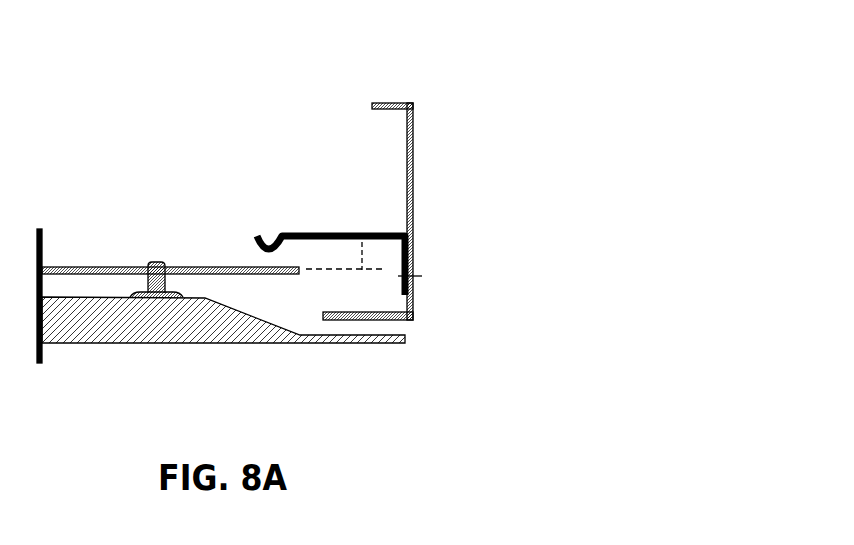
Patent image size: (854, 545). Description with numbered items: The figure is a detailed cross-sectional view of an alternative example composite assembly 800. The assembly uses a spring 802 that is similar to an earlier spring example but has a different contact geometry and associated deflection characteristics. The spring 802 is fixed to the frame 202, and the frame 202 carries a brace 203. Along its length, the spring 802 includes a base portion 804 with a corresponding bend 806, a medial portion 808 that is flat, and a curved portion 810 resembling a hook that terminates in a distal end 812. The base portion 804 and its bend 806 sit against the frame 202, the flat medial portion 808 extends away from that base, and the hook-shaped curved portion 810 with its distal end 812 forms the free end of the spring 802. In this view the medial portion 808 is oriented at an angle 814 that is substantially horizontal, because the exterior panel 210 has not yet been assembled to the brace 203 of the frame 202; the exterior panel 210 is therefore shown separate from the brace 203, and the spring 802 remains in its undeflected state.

The composite assembly 800 is at (382, 66).
The frame 202 is at (449, 127).
The brace 203 is at (413, 145).
The spring 802 is at (383, 220).
The bend 806 is at (402, 232).
The angle 814 is at (362, 256).
The base portion 804 is at (414, 279).
The curved portion 810 is at (285, 235).
The medial portion 808 is at (333, 235).
The distal end 812 is at (253, 240).
The exterior panel 210 is at (80, 333).